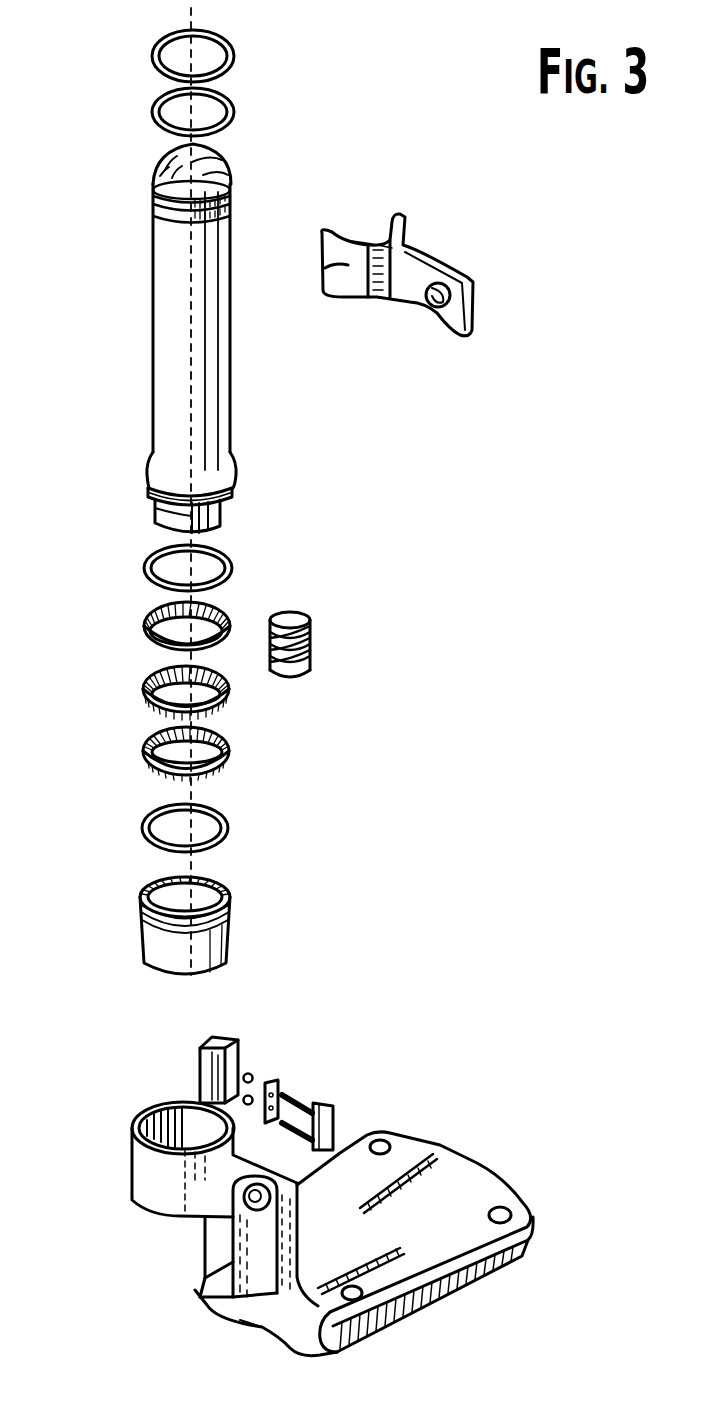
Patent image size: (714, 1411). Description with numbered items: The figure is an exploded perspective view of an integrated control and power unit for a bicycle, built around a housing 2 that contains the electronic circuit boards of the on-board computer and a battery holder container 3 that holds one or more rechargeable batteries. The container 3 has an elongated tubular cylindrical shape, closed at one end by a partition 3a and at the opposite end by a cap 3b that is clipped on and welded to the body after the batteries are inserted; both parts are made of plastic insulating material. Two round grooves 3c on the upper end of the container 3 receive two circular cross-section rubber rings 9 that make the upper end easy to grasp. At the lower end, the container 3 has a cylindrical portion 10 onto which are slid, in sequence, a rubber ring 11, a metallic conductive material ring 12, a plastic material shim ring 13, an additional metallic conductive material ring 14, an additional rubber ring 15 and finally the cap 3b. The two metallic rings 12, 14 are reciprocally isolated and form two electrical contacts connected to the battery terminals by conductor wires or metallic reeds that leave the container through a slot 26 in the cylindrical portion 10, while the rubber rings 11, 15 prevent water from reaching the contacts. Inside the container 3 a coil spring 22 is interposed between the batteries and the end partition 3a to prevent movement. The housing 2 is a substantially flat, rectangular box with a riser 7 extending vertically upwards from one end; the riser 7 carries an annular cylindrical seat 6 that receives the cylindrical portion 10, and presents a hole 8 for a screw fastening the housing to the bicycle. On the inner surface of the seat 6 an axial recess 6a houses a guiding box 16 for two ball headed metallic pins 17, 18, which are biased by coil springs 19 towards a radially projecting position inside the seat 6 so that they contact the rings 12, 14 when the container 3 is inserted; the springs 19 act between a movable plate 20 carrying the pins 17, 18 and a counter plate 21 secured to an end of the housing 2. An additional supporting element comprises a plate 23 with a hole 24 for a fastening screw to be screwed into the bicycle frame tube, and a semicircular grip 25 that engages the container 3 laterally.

The housing 2 is at (472, 1267).
The battery holder container 3 is at (204, 319).
The partition 3a is at (215, 165).
The cap 3b is at (230, 925).
The round grooves 3c is at (232, 206).
The annular cylindrical seat 6 is at (159, 1173).
The axial recess 6a is at (211, 1141).
The riser 7 is at (200, 1296).
The hole 8 is at (213, 1222).
The rubber rings 9 is at (236, 54).
The cylindrical portion 10 is at (218, 530).
The rubber ring 11 is at (233, 568).
The metallic conductive material ring 12 is at (225, 628).
The plastic material shim ring 13 is at (231, 694).
The additional metallic conductive material ring 14 is at (228, 758).
The additional rubber ring 15 is at (229, 828).
The guiding box 16 is at (200, 1060).
The ball headed metallic pin 17 is at (247, 1072).
The ball headed metallic pin 18 is at (250, 1095).
The coil springs 19 is at (293, 1100).
The movable plate 20 is at (280, 1085).
The counter plate 21 is at (340, 1116).
The coil spring 22 is at (312, 638).
The plate 23 is at (410, 283).
The hole 24 is at (431, 308).
The semicircular grip 25 is at (331, 270).
The slot 26 is at (155, 513).